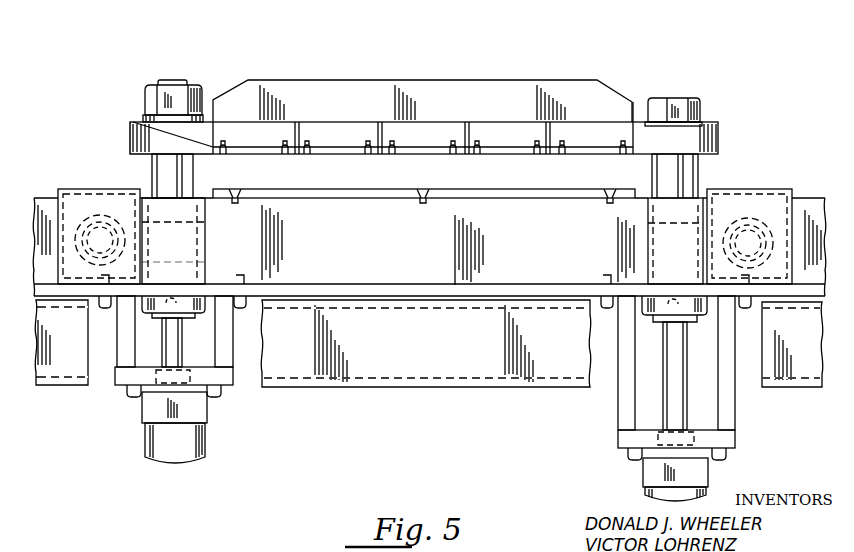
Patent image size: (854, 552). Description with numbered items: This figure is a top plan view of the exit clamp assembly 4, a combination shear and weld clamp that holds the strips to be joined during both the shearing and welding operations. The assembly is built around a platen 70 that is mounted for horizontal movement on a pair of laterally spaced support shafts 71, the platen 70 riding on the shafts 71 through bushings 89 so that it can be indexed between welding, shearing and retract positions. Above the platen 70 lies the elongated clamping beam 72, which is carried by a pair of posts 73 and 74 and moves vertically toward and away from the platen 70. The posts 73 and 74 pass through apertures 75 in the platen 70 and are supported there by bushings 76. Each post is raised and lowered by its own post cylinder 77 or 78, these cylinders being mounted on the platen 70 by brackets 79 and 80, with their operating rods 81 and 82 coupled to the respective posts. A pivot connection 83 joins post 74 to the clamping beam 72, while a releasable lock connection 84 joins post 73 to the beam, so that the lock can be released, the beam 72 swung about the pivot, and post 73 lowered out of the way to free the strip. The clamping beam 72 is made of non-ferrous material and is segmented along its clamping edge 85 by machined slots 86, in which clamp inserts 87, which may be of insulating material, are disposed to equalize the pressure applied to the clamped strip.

The exit clamp assembly 4 is at (122, 102).
The platen 70 is at (429, 253).
The support shafts 71 is at (93, 238).
The clamping beam 72 is at (318, 92).
The post 73 is at (698, 178).
The post 74 is at (160, 176).
The apertures 75 is at (200, 241).
The bushings 76 is at (199, 262).
The post cylinder 77 is at (650, 473).
The post cylinder 78 is at (196, 444).
The bracket 79 is at (625, 402).
The bracket 80 is at (118, 355).
The operating rod 81 is at (675, 402).
The operating rod 82 is at (177, 348).
The pivot connection 83 is at (150, 134).
The releasable lock connection 84 is at (710, 120).
The clamping edge 85 is at (421, 150).
The machined slots 86 is at (501, 120).
The clamp inserts 87 is at (505, 152).
The bushings 89 is at (712, 233).